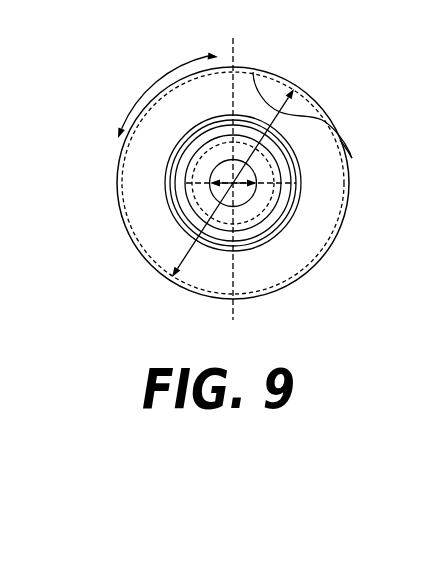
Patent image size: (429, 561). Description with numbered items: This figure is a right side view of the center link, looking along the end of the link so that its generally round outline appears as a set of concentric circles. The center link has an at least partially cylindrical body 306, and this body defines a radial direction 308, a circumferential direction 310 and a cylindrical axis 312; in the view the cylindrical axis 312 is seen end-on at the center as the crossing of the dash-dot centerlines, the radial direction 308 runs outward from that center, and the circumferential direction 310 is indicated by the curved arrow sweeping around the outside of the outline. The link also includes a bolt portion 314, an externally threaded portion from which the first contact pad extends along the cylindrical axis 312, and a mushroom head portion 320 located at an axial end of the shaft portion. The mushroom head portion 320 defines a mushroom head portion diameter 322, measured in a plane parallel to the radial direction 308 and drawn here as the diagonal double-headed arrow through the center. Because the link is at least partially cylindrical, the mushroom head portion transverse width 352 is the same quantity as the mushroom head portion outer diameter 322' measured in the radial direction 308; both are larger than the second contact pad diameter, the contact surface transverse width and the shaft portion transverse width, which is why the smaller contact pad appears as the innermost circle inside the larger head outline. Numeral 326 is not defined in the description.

The at least partially cylindrical body 306 is at (272, 58).
The radial direction 308 is at (267, 217).
The circumferential direction 310 is at (163, 79).
The cylindrical axis 312 is at (218, 173).
The bolt portion 314 is at (287, 205).
The mushroom head portion 320 is at (346, 121).
The mushroom head portion diameter 322 is at (299, 118).
The mushroom head portion outer diameter 322' is at (374, 156).
The inner diameter 326 is at (218, 173).
The mushroom head portion transverse width 352 is at (253, 72).